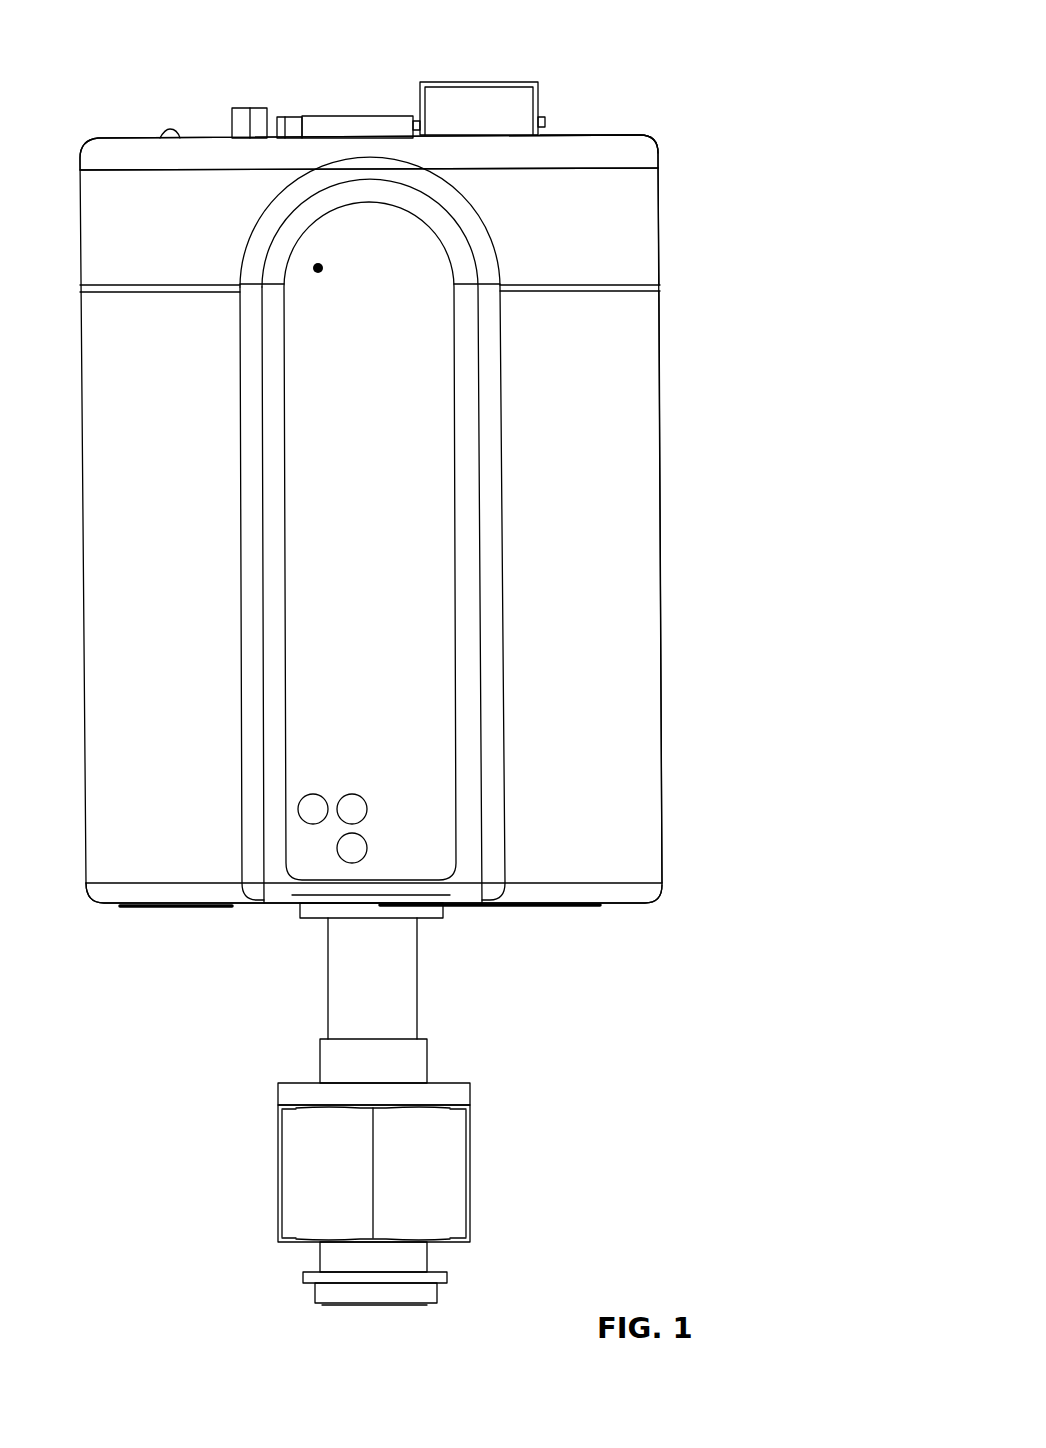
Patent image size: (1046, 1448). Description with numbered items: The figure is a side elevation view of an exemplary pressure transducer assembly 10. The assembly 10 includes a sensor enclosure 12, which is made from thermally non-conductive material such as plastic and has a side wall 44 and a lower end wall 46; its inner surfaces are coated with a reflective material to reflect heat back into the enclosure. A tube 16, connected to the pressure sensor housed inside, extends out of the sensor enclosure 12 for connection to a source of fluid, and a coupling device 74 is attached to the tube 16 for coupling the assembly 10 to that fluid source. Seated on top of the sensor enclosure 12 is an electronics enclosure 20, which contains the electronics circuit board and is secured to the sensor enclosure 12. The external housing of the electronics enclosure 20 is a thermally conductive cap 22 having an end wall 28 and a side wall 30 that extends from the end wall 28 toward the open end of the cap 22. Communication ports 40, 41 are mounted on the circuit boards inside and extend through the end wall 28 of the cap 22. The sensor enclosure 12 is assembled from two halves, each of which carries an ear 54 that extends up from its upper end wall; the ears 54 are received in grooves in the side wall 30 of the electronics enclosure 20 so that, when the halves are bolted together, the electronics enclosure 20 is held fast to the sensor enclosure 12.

The pressure transducer assembly 10 is at (814, 286).
The sensor enclosure 12 is at (672, 597).
The tube 16 is at (405, 990).
The electronics enclosure 20 is at (656, 132).
The cap 22 is at (668, 197).
The end wall 28 is at (596, 131).
The side wall 30 is at (660, 245).
The communication port 40 is at (345, 123).
The communication port 41 is at (503, 97).
The side wall 44 is at (660, 783).
The lower end wall 46 is at (588, 903).
The ear 54 is at (445, 228).
The coupling device 74 is at (463, 1205).